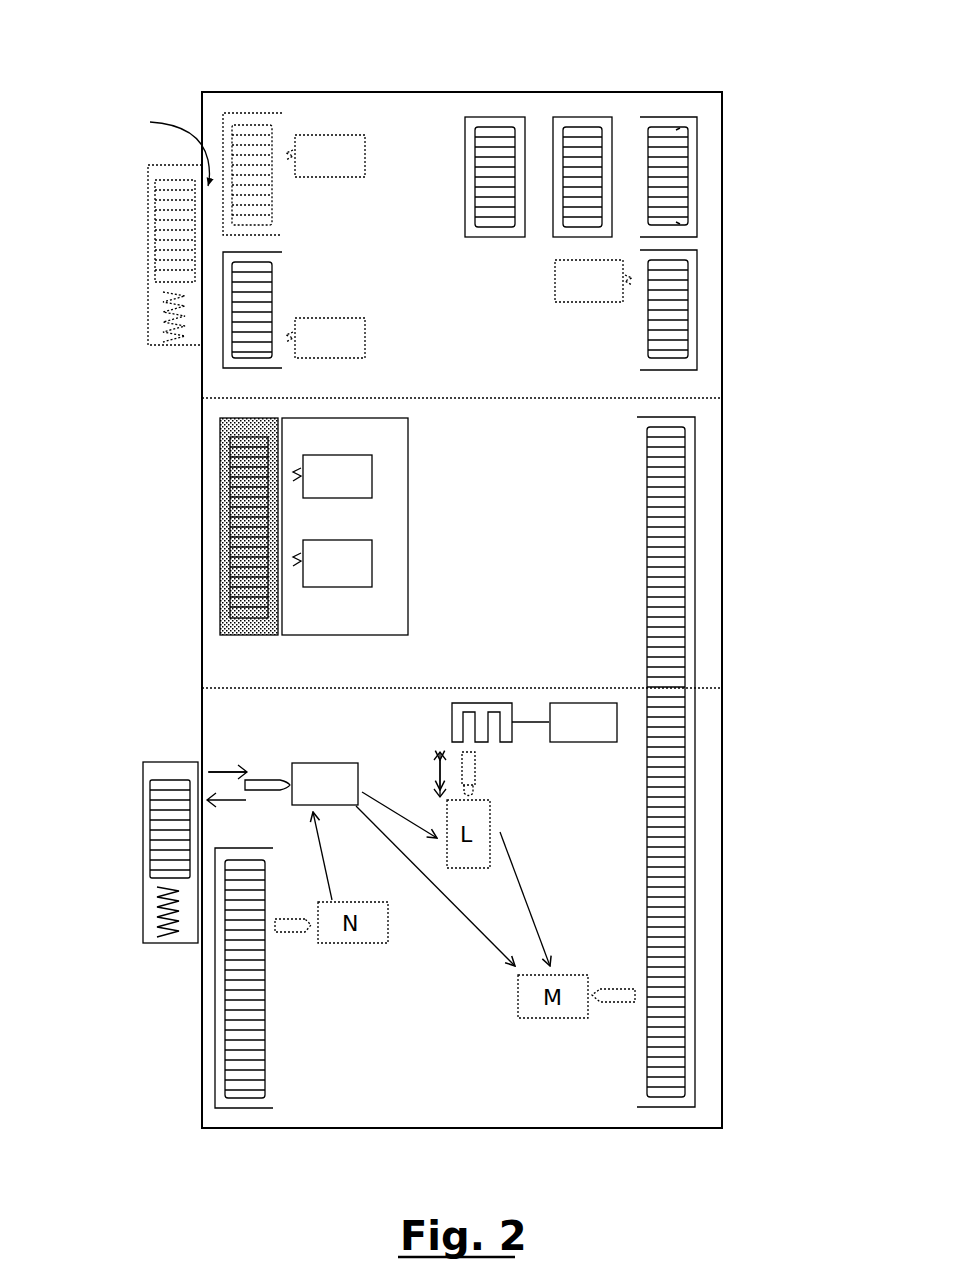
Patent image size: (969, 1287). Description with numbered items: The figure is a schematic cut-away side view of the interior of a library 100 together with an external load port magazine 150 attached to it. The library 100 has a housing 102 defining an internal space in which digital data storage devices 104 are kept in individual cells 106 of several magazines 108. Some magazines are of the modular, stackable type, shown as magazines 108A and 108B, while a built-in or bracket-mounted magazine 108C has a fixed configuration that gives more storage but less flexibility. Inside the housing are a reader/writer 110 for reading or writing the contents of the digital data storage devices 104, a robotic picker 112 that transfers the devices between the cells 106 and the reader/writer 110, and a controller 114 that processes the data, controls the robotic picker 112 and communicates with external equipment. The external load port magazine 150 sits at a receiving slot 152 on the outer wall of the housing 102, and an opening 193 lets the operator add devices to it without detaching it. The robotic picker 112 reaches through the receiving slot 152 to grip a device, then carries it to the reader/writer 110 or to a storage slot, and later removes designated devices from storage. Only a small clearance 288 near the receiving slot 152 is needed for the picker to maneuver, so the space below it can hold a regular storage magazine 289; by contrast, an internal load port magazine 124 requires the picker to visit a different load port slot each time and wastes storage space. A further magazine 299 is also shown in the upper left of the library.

The library 100 is at (203, 70).
The housing 102 is at (702, 92).
The digital data storage device 104 is at (490, 135).
The cell 106 is at (676, 222).
The magazine 108 is at (575, 118).
The modular magazine 108A is at (697, 305).
The modular magazine 108B is at (701, 123).
The built-in magazine 108C is at (697, 652).
The reader/writer 110 is at (450, 715).
The robotic picker 112 is at (325, 137).
The controller 114 is at (578, 713).
The internal load port magazine 124 is at (222, 525).
The external load port magazine 150 is at (150, 314).
The receiving slot 152 is at (160, 149).
The opening 193 is at (146, 190).
The clearance 288 is at (226, 818).
The magazine 289 is at (222, 360).
The rack 299 is at (243, 113).